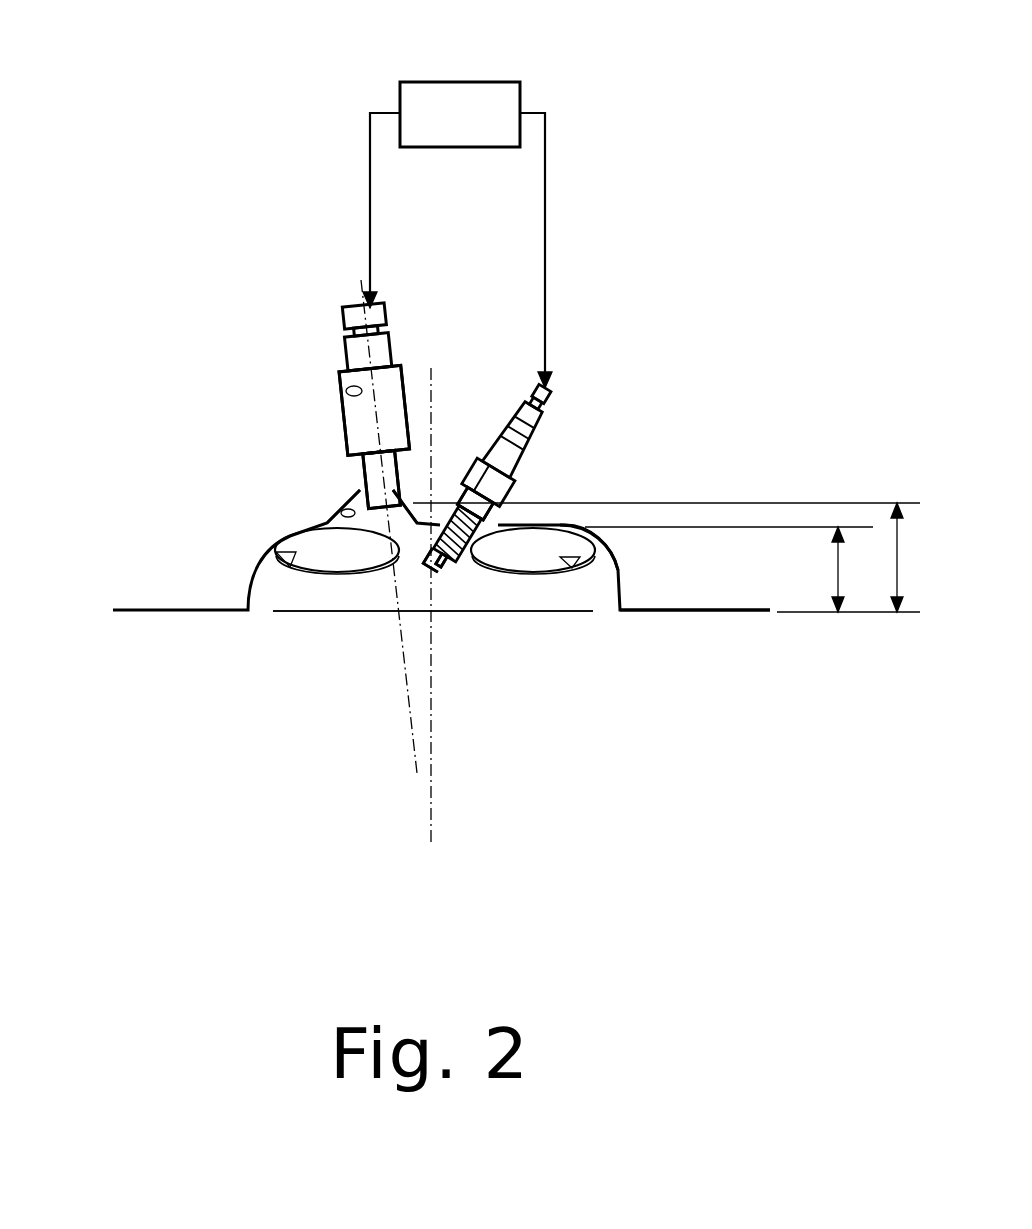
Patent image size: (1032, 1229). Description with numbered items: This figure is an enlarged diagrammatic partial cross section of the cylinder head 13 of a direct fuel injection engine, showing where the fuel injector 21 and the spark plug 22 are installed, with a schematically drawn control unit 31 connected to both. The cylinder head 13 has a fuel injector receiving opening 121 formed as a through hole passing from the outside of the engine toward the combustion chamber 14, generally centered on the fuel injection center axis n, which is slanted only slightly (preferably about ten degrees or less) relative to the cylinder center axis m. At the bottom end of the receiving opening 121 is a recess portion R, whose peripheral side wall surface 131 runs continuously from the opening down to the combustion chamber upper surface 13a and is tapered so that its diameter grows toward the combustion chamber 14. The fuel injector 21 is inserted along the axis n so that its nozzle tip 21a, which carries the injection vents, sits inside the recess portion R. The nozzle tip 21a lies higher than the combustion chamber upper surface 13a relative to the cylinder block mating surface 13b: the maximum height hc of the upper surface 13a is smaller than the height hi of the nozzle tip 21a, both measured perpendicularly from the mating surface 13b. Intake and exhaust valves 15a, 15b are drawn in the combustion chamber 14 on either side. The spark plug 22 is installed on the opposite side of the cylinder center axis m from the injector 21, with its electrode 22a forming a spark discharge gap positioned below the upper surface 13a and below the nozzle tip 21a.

The control unit 31 is at (462, 82).
The cylinder head 13 is at (598, 372).
The combustion chamber upper surface 13a is at (627, 590).
The cylinder block mating surface 13b is at (660, 617).
The combustion chamber 14 is at (572, 597).
The intake valve 15a is at (265, 552).
The exhaust valve 15b is at (612, 588).
The fuel injector 21 is at (345, 438).
The fuel injector receiving opening 121 is at (352, 382).
The nozzle tip 21a is at (410, 500).
The peripheral side wall surface 131 is at (340, 505).
The spark plug 22 is at (520, 470).
The recess portion R is at (500, 490).
The spark plug electrode 22a is at (445, 565).
The fuel injection center axis n is at (408, 727).
The cylinder center axis m is at (432, 768).
The height of combustion chamber upper surface hc is at (731, 569).
The height of nozzle tip hi is at (672, 557).